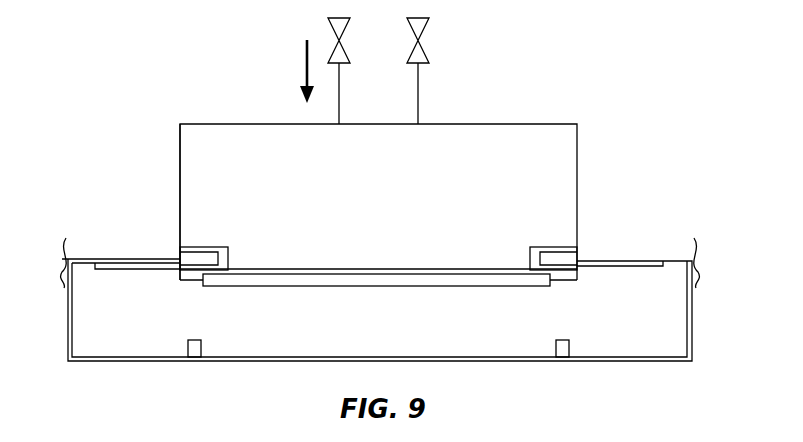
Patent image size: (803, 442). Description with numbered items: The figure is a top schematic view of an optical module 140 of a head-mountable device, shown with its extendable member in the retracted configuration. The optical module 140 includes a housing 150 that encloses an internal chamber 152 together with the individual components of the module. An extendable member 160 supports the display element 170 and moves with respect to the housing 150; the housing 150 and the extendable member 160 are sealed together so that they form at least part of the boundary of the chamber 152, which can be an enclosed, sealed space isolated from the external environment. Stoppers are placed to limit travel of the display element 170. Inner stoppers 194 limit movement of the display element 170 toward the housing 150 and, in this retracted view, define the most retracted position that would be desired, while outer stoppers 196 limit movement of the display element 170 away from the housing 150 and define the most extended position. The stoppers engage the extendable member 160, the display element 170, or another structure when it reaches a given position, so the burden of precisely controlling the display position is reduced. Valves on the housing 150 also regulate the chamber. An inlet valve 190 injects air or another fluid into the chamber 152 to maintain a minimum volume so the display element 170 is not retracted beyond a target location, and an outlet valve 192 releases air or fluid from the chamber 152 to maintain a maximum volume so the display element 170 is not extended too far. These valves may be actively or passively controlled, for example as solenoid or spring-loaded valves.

The optical module 140 is at (126, 34).
The housing 150 is at (238, 124).
The internal chamber 152 is at (203, 212).
The extendable member 160 is at (133, 270).
The display element 170 is at (341, 287).
The inlet valve 190 is at (330, 34).
The outlet valve 192 is at (426, 34).
The inner stopper 194 is at (229, 258).
The outer stopper 196 is at (202, 350).